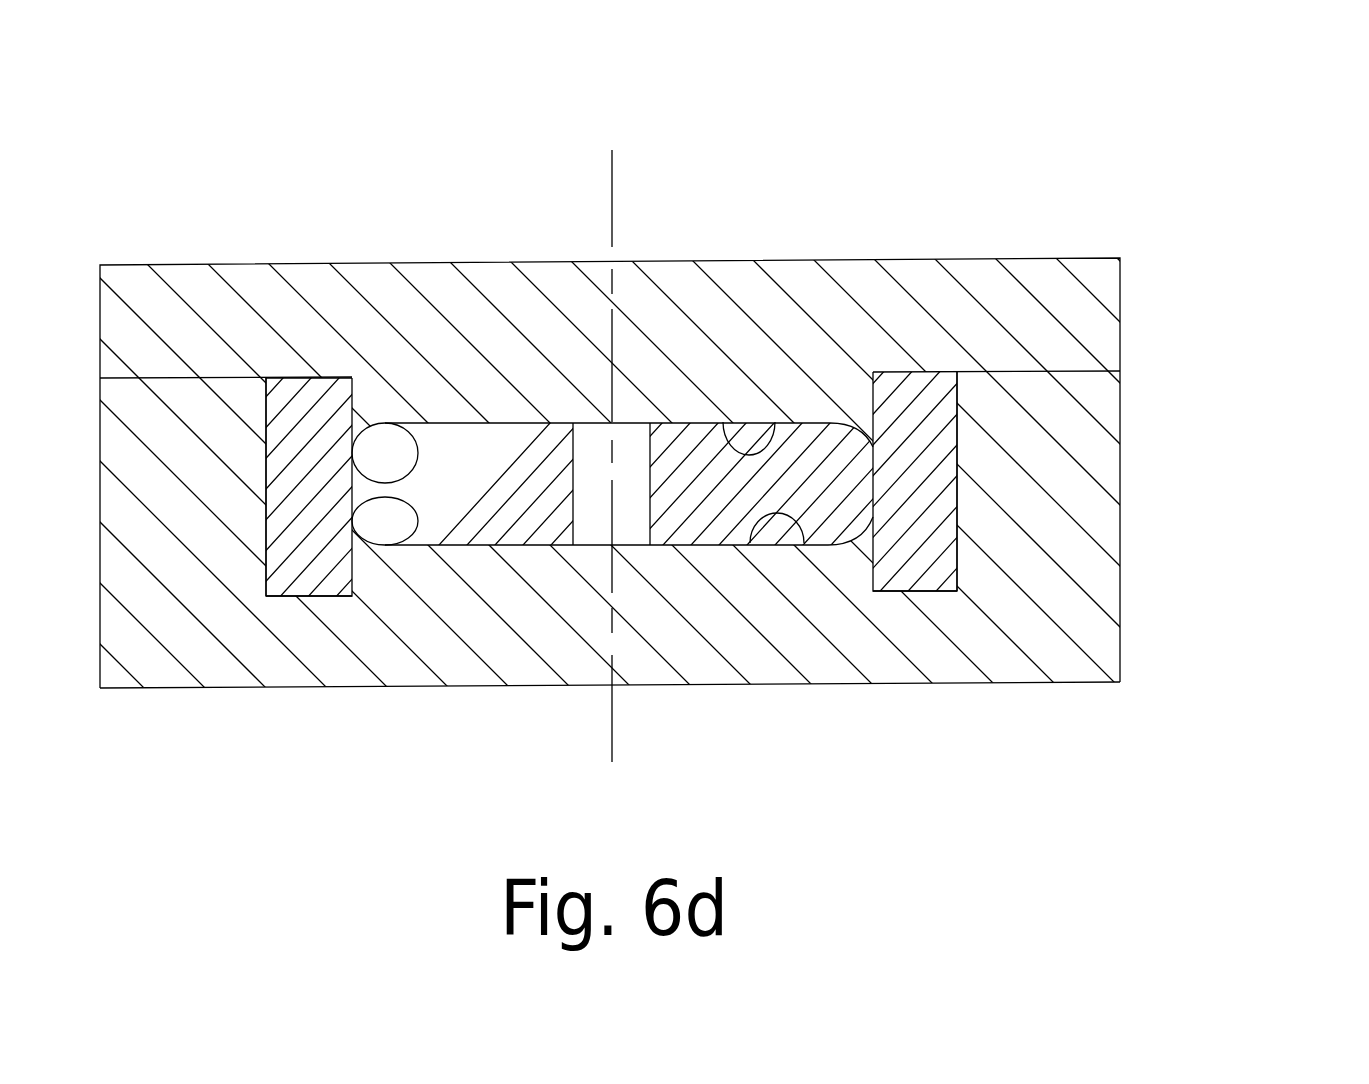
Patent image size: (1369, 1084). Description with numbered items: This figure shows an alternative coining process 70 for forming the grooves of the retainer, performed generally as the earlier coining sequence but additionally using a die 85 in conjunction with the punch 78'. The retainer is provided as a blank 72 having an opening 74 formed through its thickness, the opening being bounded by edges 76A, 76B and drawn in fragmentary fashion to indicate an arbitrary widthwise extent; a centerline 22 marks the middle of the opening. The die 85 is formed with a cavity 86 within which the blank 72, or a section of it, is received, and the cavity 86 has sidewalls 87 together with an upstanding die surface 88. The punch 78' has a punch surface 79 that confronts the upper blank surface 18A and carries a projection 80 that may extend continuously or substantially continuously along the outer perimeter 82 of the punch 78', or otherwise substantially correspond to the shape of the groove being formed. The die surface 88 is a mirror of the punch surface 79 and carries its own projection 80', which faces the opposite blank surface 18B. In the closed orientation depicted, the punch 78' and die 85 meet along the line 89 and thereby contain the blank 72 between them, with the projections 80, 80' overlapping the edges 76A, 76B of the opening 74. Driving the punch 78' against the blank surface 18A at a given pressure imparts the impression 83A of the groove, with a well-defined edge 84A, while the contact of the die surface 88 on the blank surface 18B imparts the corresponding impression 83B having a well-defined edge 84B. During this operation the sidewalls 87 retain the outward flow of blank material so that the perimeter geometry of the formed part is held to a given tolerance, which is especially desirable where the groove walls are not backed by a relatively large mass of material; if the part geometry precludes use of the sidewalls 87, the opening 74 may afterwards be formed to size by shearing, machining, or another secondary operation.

The coining process 70 is at (1190, 104).
The blank 72 is at (957, 467).
The opening 74 is at (640, 425).
The edge of opening 76A is at (588, 512).
The edge of opening 76B is at (650, 510).
The punch 78' is at (697, 298).
The punch surface 79 is at (775, 422).
The projection 80 is at (380, 326).
The projection of die surface 80' is at (409, 652).
The outer perimeter of punch 82 is at (903, 408).
The impression 83A is at (480, 397).
The impression 83B is at (496, 574).
The edge of impression 84A is at (352, 378).
The edge of impression 84B is at (352, 598).
The die 85 is at (1120, 662).
The cavity 86 is at (942, 553).
The sidewall 87 is at (957, 395).
The die surface 88 is at (804, 543).
The line 89 is at (1070, 372).
The blank surface 18A is at (283, 377).
The blank surface 18B is at (283, 597).
The centerline 22 is at (612, 150).